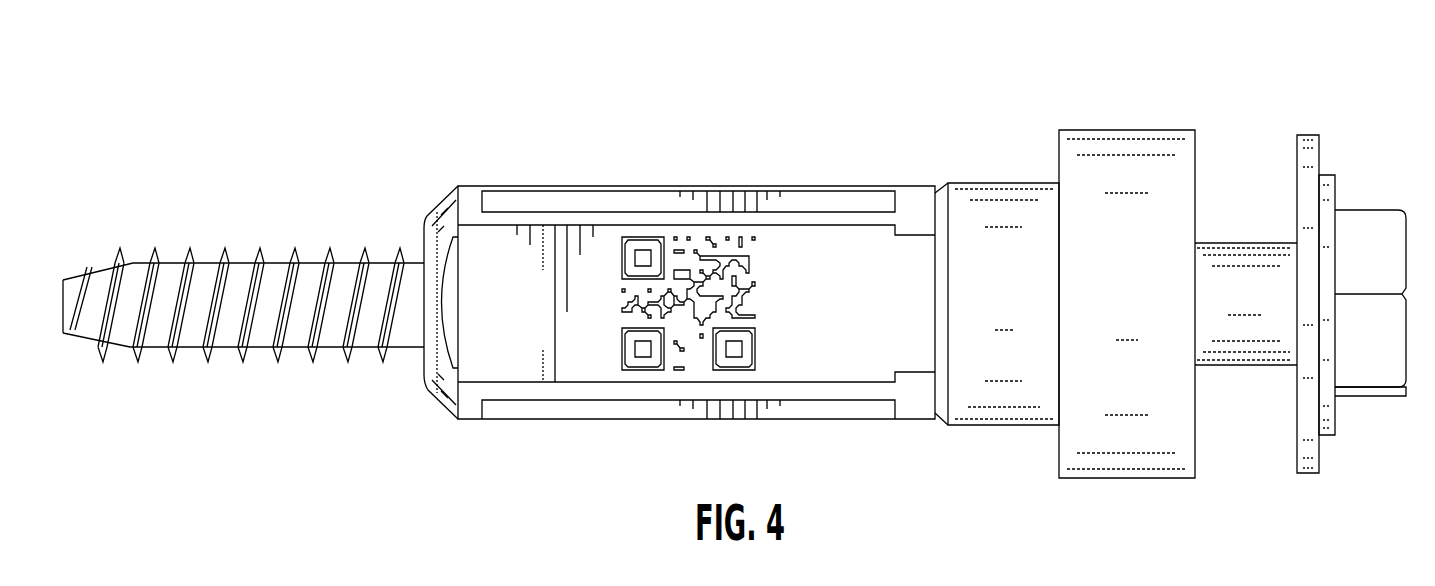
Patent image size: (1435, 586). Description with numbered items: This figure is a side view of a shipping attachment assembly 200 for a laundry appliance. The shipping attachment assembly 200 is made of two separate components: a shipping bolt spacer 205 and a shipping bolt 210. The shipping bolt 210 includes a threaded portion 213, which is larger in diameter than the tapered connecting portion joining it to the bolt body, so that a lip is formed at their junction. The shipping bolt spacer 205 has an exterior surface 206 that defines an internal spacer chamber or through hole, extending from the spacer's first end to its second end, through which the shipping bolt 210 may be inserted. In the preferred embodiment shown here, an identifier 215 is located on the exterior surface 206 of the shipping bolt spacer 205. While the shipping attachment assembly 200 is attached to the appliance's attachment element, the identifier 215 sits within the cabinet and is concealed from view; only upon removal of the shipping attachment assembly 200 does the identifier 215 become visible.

The shipping attachment assembly 200 is at (283, 120).
The shipping bolt spacer 205 is at (567, 190).
The exterior surface 206 is at (488, 363).
The shipping bolt 210 is at (1240, 365).
The threaded portion 213 is at (207, 362).
The identifier 215 is at (760, 240).